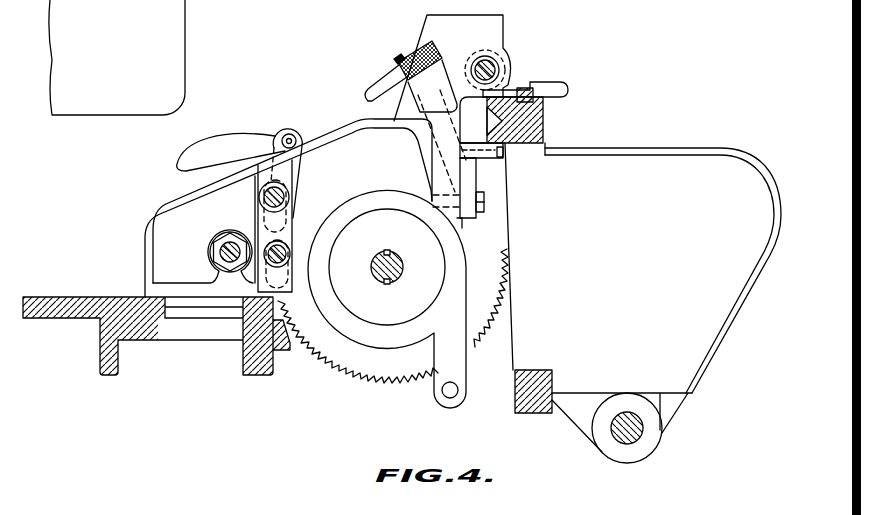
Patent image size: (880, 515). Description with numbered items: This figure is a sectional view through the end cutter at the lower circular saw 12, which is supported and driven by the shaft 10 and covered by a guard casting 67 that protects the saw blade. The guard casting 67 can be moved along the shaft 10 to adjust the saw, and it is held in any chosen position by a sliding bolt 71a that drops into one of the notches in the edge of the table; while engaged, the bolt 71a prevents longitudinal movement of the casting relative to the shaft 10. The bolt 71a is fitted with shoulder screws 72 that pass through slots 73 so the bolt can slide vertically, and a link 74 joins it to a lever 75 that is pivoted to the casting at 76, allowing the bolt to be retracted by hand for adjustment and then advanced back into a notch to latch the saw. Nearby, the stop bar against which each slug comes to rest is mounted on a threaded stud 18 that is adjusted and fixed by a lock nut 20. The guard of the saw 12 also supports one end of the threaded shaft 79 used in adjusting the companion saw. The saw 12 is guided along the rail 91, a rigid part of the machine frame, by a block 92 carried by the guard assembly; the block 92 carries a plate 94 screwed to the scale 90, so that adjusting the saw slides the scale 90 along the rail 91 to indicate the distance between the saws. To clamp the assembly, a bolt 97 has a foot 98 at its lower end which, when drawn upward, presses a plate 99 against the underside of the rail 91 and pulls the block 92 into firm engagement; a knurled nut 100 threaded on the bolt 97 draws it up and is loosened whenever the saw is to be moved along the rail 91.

The shaft 10 is at (403, 268).
The circular saw 12 is at (350, 362).
The threaded stud 18 is at (225, 243).
The lock nut 20 is at (218, 253).
The guard casting 67 is at (399, 171).
The sliding bolt 71a is at (313, 314).
The shoulder screw 72 is at (283, 200).
The slot 73 is at (288, 220).
The link 74 is at (303, 168).
The lever 75 is at (226, 144).
The pivot 76 is at (266, 166).
The threaded shaft 79 is at (488, 54).
The scale 90 is at (548, 93).
The rail 91 is at (544, 122).
The block 92 is at (482, 128).
The plate 94 is at (525, 87).
The bolt 97 is at (398, 56).
The foot 98 is at (462, 165).
The plate 99 is at (503, 154).
The knurled nut 100 is at (382, 88).